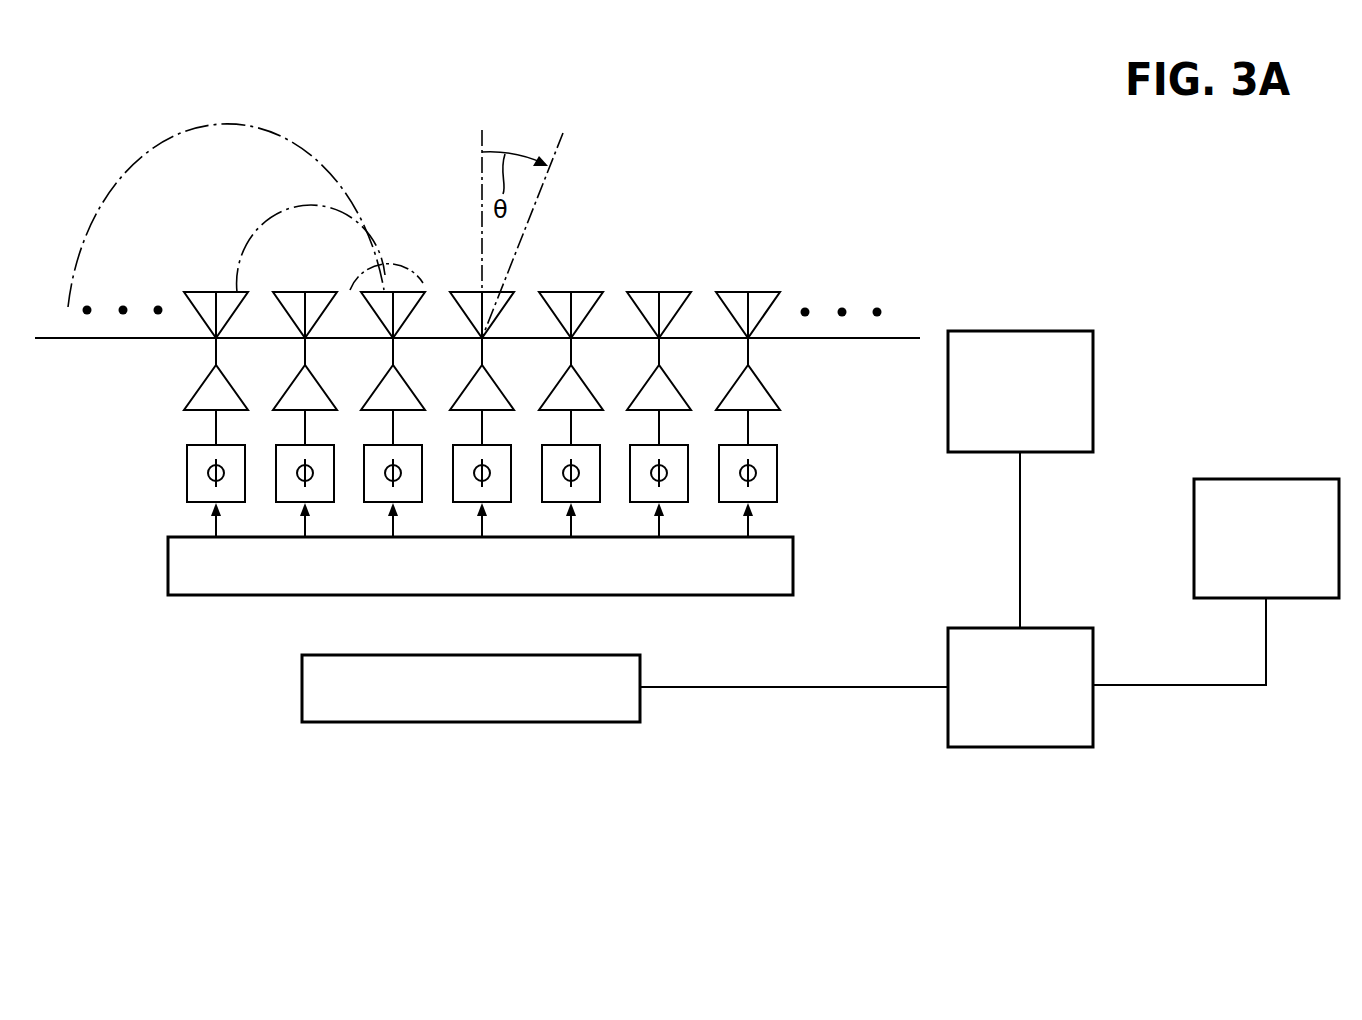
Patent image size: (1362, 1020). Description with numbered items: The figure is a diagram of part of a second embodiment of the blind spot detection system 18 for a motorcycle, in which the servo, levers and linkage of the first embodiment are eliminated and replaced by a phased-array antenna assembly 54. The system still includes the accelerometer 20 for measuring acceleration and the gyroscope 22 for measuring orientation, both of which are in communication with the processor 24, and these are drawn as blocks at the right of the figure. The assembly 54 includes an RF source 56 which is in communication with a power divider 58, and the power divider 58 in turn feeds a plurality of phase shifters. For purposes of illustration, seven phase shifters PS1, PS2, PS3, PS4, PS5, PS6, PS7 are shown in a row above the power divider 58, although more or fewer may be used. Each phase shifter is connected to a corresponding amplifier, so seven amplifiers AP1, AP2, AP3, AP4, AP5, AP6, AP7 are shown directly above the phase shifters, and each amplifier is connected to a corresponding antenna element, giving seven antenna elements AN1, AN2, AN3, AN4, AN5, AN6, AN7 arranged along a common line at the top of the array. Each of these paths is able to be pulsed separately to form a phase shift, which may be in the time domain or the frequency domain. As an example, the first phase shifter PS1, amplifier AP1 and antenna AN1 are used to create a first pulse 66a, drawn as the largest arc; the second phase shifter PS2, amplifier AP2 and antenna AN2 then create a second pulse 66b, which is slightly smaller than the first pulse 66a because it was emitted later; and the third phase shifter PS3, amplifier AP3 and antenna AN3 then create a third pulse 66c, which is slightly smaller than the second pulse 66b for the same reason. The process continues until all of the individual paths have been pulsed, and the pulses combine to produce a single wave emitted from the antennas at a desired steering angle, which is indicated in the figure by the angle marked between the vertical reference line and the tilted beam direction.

The blind spot detection system 18 is at (885, 164).
The accelerometer 20 is at (1003, 331).
The gyroscope 22 is at (1240, 479).
The processor 24 is at (1038, 628).
The phased-array antenna assembly 54 is at (383, 741).
The RF source 56 is at (300, 688).
The power divider 58 is at (175, 570).
The first pulse 66a is at (112, 181).
The second pulse 66b is at (268, 227).
The third pulse 66c is at (402, 260).
The antenna element AN1 is at (205, 292).
The antenna element AN2 is at (330, 292).
The antenna element AN3 is at (407, 313).
The antenna element AN4 is at (497, 315).
The antenna element AN5 is at (586, 315).
The antenna element AN6 is at (674, 315).
The antenna element AN7 is at (763, 315).
The amplifier AP1 is at (203, 400).
The amplifier AP2 is at (292, 400).
The amplifier AP3 is at (380, 400).
The amplifier AP4 is at (469, 400).
The amplifier AP5 is at (558, 400).
The amplifier AP6 is at (646, 400).
The amplifier AP7 is at (735, 400).
The phase shifter PS1 is at (187, 480).
The phase shifter PS2 is at (276, 480).
The phase shifter PS3 is at (364, 480).
The phase shifter PS4 is at (453, 480).
The phase shifter PS5 is at (542, 480).
The phase shifter PS6 is at (630, 480).
The phase shifter PS7 is at (777, 482).